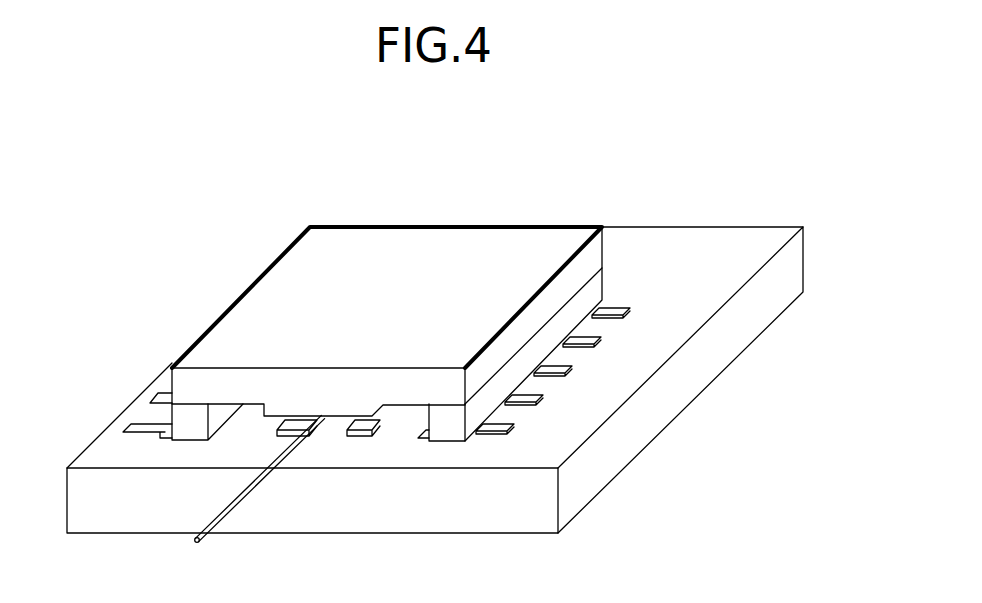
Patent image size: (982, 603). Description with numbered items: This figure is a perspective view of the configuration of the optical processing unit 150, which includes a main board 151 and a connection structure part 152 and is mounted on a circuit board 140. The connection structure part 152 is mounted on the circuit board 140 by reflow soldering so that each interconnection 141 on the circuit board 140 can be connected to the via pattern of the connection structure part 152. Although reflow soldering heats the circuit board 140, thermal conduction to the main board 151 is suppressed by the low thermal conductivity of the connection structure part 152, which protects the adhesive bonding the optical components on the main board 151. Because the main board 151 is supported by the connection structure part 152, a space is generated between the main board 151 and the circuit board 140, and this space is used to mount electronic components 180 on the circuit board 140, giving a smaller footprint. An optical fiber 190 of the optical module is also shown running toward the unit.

The circuit board 140 is at (727, 227).
The interconnection 141 is at (528, 395).
The optical processing unit 150 is at (371, 201).
The main board 151 is at (484, 245).
The connection structure part 152 is at (588, 294).
The electronic component 180 is at (360, 436).
The optical fiber 190 is at (253, 492).